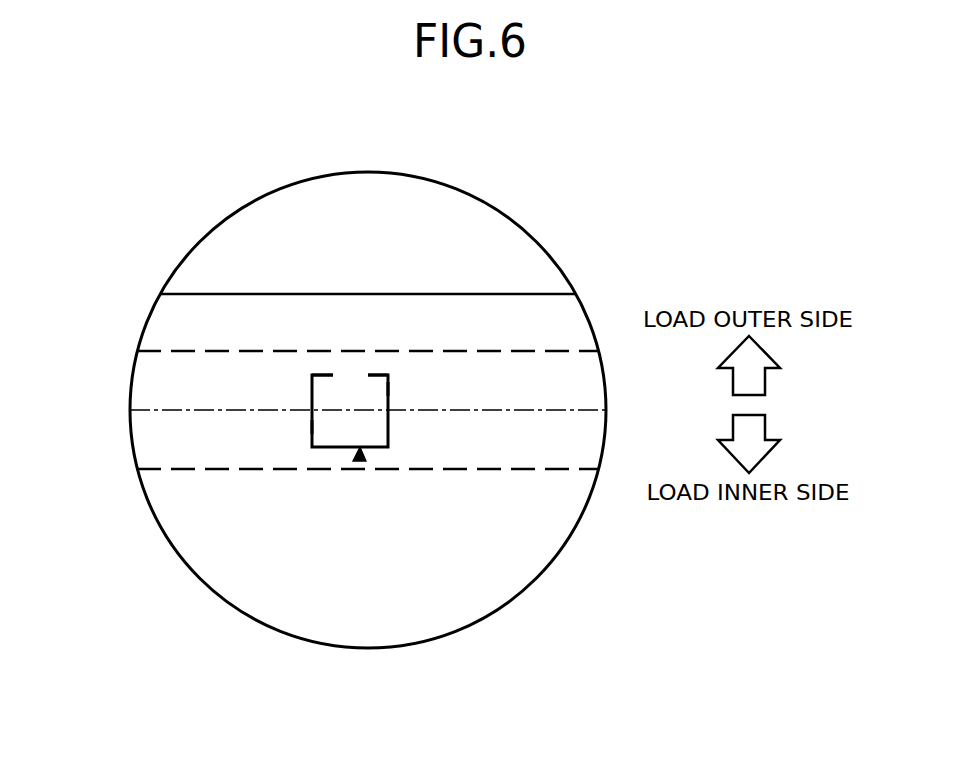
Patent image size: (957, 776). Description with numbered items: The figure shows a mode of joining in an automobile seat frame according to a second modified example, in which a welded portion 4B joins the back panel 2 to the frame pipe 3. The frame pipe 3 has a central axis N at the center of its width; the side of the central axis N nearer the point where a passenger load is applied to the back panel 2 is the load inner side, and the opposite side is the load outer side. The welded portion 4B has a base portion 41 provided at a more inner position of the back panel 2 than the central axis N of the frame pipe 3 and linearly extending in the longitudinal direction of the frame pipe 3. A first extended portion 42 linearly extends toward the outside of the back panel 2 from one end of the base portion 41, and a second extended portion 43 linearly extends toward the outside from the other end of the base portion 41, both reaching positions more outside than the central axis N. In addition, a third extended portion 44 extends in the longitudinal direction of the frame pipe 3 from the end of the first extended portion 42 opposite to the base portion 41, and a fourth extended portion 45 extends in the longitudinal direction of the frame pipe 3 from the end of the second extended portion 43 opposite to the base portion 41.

The back panel 2 is at (432, 312).
The frame pipe 3 is at (256, 351).
The central axis N is at (553, 410).
The base portion 41 is at (332, 447).
The first extended portion 42 is at (312, 427).
The second extended portion 43 is at (388, 389).
The third extended portion 44 is at (322, 375).
The fourth extended portion 45 is at (380, 375).
The welded portion 4B is at (357, 461).